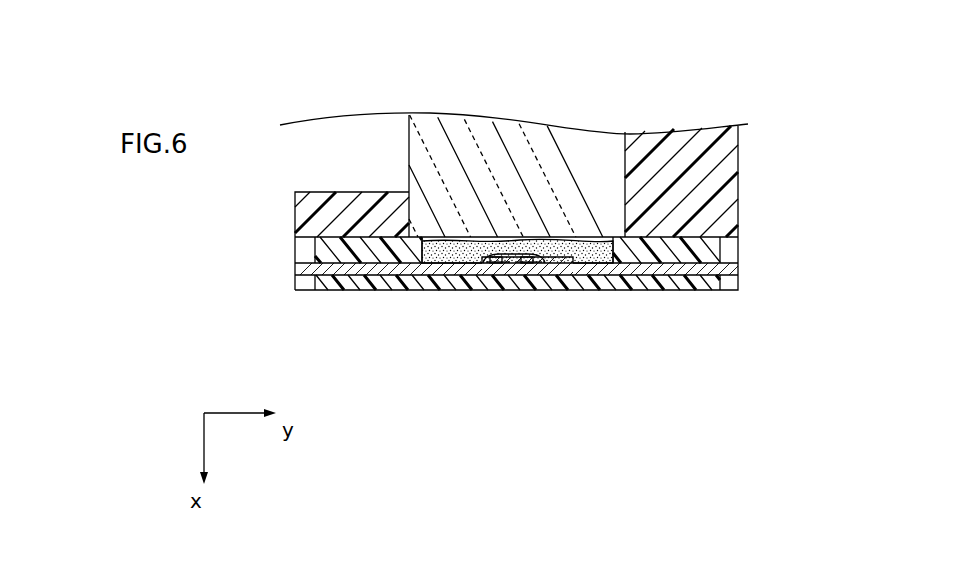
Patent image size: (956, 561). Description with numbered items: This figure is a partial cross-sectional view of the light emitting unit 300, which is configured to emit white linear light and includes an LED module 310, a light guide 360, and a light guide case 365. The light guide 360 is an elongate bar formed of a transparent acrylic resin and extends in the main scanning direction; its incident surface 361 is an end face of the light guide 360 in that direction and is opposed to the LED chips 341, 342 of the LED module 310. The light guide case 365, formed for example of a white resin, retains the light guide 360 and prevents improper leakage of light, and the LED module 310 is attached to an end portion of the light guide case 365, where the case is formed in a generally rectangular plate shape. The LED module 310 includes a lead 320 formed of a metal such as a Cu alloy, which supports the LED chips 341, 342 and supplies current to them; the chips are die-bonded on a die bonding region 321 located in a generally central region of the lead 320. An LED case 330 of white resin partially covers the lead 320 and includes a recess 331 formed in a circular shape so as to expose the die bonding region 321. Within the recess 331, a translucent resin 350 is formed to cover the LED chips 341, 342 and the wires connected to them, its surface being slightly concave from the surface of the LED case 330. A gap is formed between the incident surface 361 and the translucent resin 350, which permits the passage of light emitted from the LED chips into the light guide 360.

The light emitting unit 300 is at (266, 102).
The LED module 310 is at (329, 299).
The lead 320 is at (460, 320).
The die bonding region 321 is at (491, 262).
The LED case 330 is at (692, 292).
The recess 331 is at (615, 272).
The LED chip 341 is at (503, 263).
The LED chip 342 is at (530, 263).
The translucent resin 350 is at (576, 262).
The light guide 360 is at (540, 136).
The incident surface 361 is at (445, 243).
The light guide case 365 is at (665, 147).